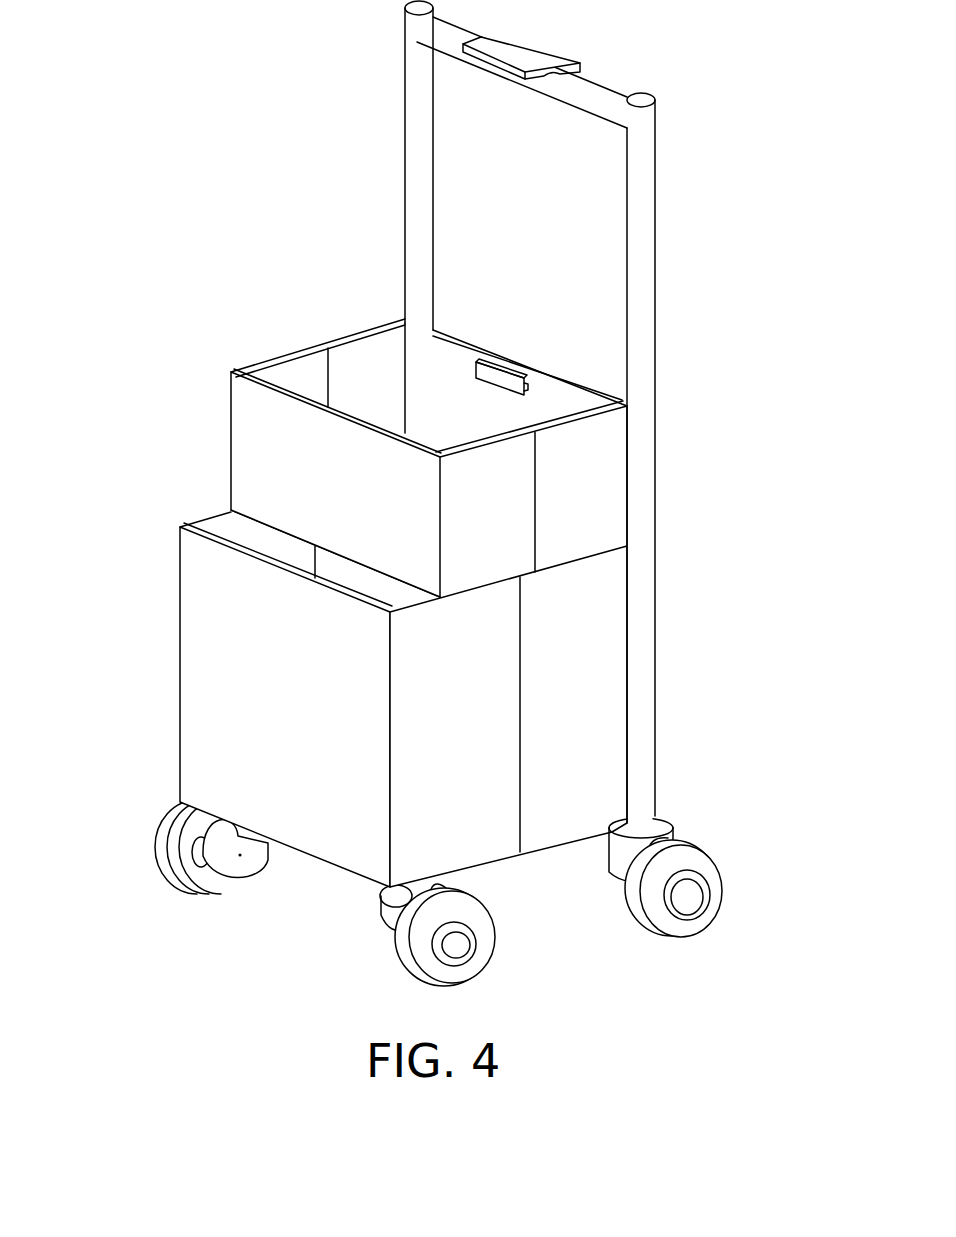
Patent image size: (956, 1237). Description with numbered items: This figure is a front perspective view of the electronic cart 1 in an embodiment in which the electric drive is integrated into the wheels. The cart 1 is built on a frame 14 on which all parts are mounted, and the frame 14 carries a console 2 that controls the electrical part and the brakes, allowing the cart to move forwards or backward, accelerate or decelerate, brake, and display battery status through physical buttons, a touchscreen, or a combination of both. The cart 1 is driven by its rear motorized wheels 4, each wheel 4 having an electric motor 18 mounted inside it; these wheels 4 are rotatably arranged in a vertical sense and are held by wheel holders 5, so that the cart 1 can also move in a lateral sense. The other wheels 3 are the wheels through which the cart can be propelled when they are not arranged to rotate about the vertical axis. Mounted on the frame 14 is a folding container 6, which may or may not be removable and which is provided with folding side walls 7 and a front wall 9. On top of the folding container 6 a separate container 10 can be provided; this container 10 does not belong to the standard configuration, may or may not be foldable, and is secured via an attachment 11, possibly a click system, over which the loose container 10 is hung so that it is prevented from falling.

The electronic cart 1 is at (268, 75).
The console 2 is at (516, 46).
The wheels 3 is at (160, 838).
The motorized wheels 4 is at (698, 892).
The wheel holder 5 is at (620, 856).
The folding container 6 is at (363, 698).
The side walls 7 is at (638, 698).
The front wall 9 is at (197, 748).
The separate container 10 is at (388, 457).
The attachment 11 is at (497, 366).
The frame 14 is at (418, 204).
The electric motor 18 is at (688, 898).